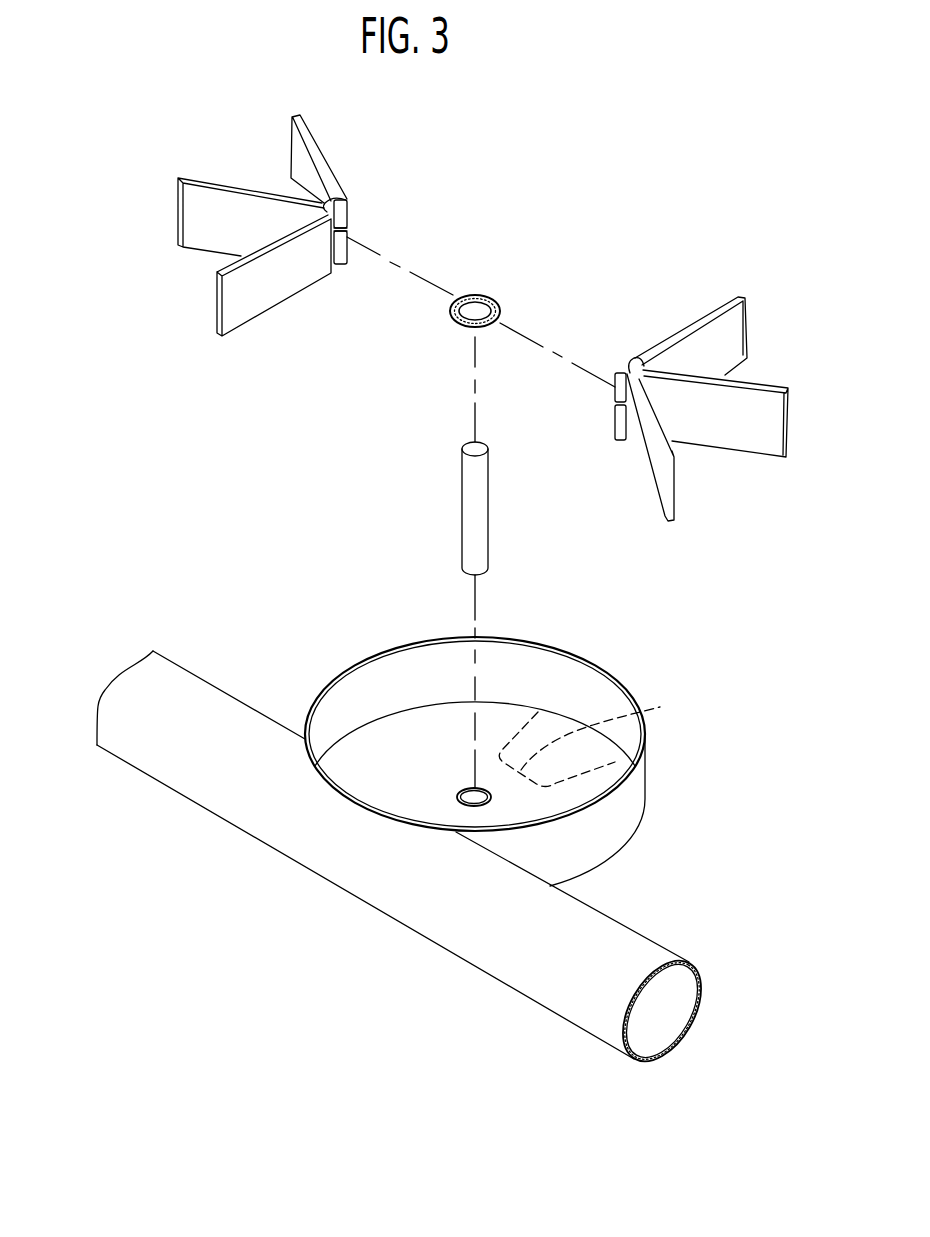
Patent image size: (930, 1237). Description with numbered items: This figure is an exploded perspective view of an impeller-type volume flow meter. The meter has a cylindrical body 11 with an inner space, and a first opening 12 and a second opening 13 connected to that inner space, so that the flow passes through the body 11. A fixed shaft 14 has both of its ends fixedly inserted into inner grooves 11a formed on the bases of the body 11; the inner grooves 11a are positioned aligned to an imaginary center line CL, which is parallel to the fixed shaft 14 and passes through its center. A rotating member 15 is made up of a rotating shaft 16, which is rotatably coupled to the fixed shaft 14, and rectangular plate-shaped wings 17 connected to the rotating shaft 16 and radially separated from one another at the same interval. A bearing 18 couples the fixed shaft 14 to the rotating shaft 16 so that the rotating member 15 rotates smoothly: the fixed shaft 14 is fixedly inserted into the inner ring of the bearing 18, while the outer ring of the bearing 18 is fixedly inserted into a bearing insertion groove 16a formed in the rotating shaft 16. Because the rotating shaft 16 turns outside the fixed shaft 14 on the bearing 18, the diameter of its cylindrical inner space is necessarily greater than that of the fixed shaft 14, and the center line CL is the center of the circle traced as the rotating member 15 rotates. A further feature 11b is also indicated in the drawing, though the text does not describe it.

The body 11 is at (502, 739).
The inner groove 11a is at (481, 793).
The discharge port 11b is at (660, 707).
The first opening 12 is at (152, 742).
The second opening 13 is at (548, 962).
The fixed shaft 14 is at (483, 517).
The rotating member 15 is at (242, 225).
The rotating shaft 16 is at (322, 210).
The bearing insertion groove 16a is at (344, 233).
The wing 17 is at (193, 205).
The bearing 18 is at (486, 298).
The center line CL is at (474, 607).